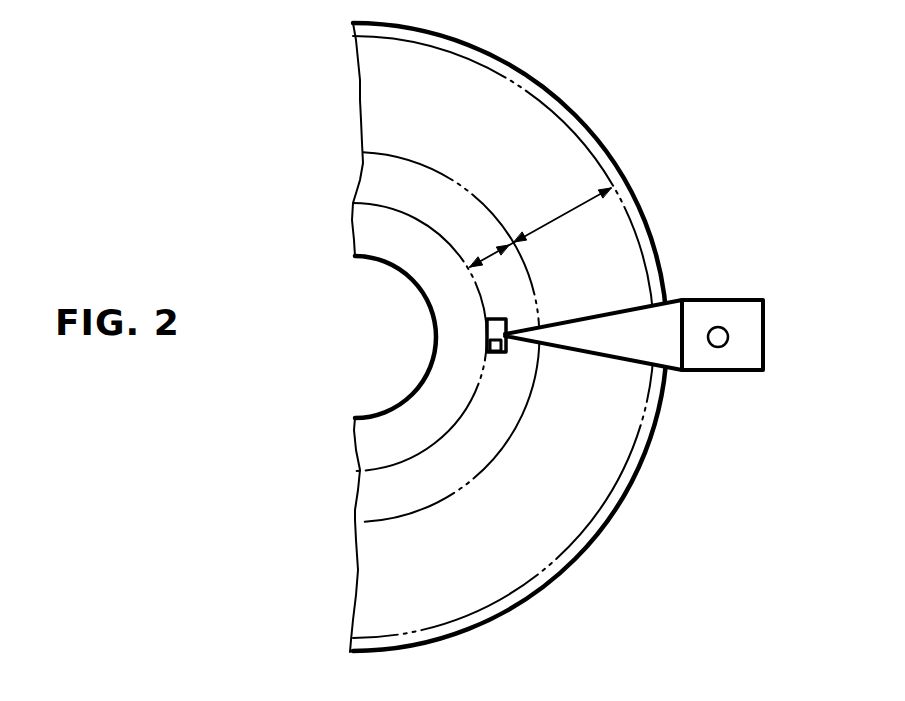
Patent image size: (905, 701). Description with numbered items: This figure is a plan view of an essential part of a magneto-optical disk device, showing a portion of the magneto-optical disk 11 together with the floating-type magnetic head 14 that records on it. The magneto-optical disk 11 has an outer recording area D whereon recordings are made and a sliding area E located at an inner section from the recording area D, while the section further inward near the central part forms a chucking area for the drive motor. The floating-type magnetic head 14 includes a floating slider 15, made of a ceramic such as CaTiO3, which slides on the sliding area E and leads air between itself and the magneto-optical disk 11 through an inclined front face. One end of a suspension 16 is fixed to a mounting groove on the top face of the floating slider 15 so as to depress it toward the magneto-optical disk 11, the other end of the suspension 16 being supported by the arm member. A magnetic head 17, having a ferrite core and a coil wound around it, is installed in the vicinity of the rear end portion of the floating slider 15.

The magneto-optical disk 11 is at (573, 168).
The floating-type magnetic head 14 is at (590, 357).
The floating slider 15 is at (489, 320).
The suspension 16 is at (745, 316).
The magnetic head 17 is at (497, 353).